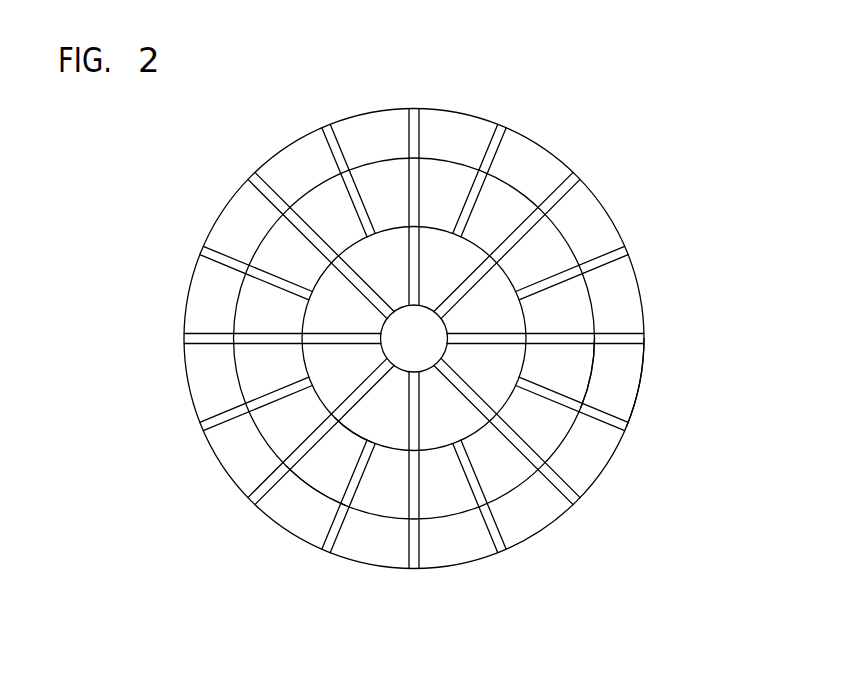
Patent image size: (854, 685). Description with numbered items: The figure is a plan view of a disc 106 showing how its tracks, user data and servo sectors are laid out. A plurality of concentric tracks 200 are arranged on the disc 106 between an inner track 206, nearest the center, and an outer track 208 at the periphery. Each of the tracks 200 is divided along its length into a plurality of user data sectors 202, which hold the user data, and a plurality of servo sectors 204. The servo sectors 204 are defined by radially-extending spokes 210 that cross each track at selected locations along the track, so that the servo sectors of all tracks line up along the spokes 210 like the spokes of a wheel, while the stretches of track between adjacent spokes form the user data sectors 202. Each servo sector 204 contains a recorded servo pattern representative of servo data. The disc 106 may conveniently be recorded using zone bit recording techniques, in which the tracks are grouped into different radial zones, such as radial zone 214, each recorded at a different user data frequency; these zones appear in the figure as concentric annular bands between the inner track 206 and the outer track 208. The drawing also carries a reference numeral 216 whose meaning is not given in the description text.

The disc 106 is at (596, 187).
The tracks 200 is at (553, 458).
The user data sectors 202 is at (593, 372).
The servo sectors 204 is at (590, 418).
The inner track 206 is at (383, 353).
The outer track 208 is at (203, 440).
The radially-extending spokes 210 is at (557, 492).
The radial zone 214 is at (383, 415).
The outer sector 216 is at (327, 473).